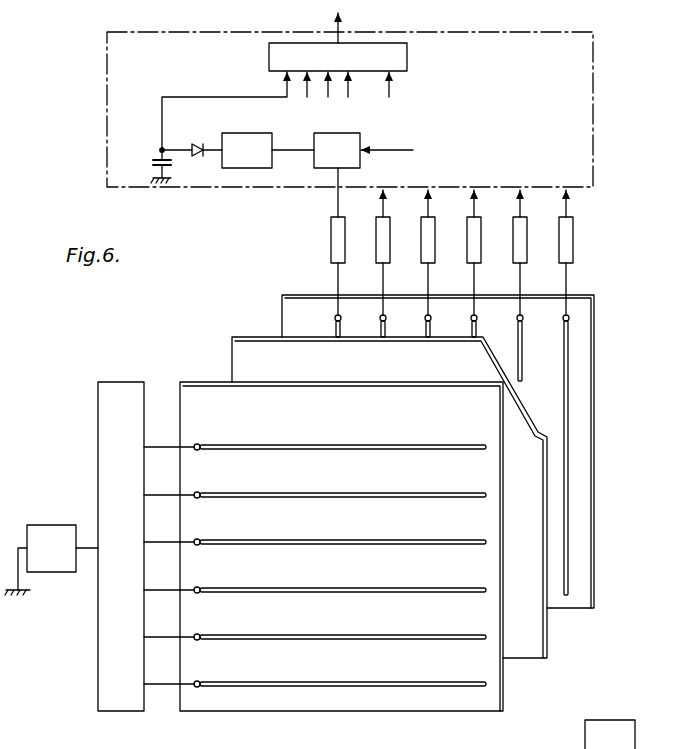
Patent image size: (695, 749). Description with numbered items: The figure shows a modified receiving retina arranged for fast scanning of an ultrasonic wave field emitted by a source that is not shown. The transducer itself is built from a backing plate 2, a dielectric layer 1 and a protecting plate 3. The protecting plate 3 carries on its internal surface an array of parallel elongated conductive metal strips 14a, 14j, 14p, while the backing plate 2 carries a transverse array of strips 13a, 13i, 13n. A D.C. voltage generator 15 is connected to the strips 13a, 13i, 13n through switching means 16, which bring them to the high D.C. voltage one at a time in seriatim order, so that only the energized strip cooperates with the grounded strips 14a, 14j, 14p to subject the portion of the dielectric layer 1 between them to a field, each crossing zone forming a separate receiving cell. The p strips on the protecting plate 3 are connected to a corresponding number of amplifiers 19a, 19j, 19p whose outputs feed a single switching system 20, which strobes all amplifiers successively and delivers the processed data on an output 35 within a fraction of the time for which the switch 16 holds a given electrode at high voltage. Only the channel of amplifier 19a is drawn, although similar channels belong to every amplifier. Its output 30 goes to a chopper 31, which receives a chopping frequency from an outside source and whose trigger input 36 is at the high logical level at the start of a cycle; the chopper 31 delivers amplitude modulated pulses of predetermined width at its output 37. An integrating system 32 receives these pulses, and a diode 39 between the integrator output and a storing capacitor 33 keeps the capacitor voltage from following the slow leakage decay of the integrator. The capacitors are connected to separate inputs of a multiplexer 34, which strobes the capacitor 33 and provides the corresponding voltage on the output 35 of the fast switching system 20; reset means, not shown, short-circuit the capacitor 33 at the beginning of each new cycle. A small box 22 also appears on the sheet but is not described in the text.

The dielectric layer 1 is at (530, 650).
The backing plate 2 is at (483, 703).
The protecting plate 3 is at (580, 594).
The strip 13a is at (210, 445).
The strip 13i is at (212, 592).
The strip 13n is at (213, 686).
The conductive metal strip 14a is at (334, 333).
The conductive metal strip 14j is at (477, 336).
The conductive metal strip 14p is at (568, 332).
The D.C. voltage generator 15 is at (51, 560).
The switching means 16 is at (121, 546).
The amplifier 19a is at (336, 236).
The amplifier 19j is at (474, 238).
The amplifier 19p is at (568, 233).
The switching system 20 is at (593, 110).
The terminal 22 is at (610, 734).
The output 30 is at (340, 205).
The chopper 31 is at (337, 150).
The integrating system 32 is at (247, 150).
The storing capacitor 33 is at (203, 127).
The multiplexer 34 is at (407, 60).
The output 35 is at (341, 23).
The trigger input 36 is at (392, 148).
The output 37 is at (294, 147).
The diode 39 is at (196, 147).